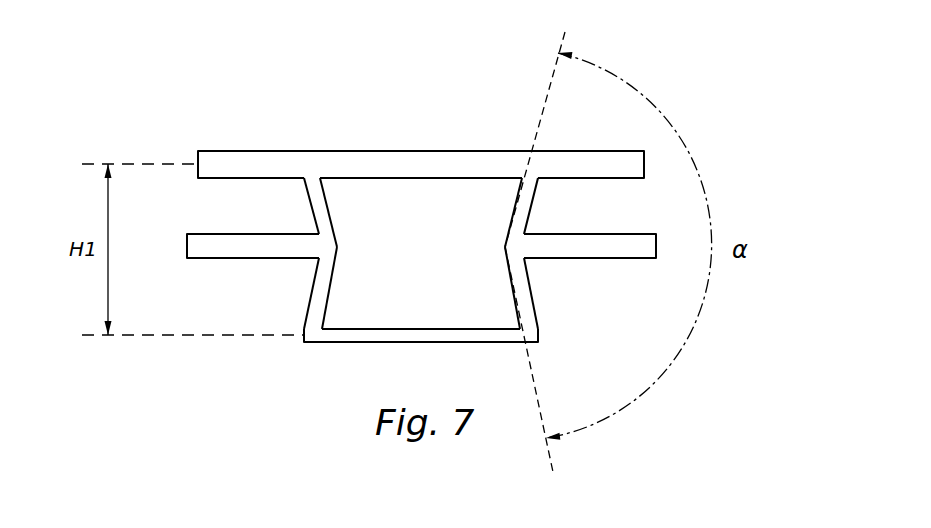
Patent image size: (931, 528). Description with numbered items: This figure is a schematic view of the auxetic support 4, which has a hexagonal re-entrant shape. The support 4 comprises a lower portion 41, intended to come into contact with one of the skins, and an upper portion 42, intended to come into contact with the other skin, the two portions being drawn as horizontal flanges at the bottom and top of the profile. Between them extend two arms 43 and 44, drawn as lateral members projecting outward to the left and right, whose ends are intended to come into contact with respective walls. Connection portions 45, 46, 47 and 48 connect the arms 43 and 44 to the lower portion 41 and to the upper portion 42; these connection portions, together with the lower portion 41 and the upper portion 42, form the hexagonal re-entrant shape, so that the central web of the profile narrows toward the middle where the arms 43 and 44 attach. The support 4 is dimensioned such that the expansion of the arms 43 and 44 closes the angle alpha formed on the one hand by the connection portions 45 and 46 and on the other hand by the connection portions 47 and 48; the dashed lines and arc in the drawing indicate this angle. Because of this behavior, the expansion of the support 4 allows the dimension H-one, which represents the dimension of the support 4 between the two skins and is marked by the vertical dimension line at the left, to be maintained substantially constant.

The support 4 is at (287, 98).
The lower portion 41 is at (400, 335).
The upper portion 42 is at (398, 162).
The arm 43 is at (240, 247).
The arm 44 is at (622, 243).
The connection portion 45 is at (325, 295).
The connection portion 46 is at (323, 220).
The connection portion 47 is at (522, 208).
The connection portion 48 is at (522, 293).